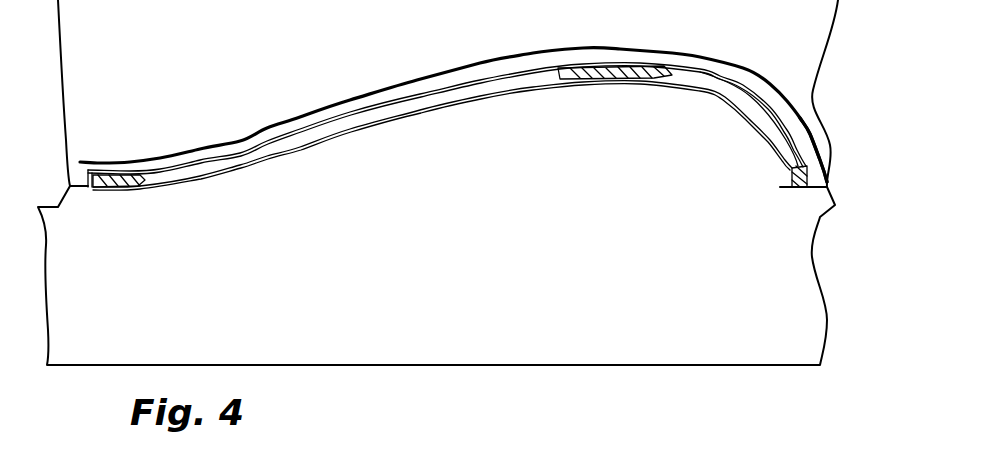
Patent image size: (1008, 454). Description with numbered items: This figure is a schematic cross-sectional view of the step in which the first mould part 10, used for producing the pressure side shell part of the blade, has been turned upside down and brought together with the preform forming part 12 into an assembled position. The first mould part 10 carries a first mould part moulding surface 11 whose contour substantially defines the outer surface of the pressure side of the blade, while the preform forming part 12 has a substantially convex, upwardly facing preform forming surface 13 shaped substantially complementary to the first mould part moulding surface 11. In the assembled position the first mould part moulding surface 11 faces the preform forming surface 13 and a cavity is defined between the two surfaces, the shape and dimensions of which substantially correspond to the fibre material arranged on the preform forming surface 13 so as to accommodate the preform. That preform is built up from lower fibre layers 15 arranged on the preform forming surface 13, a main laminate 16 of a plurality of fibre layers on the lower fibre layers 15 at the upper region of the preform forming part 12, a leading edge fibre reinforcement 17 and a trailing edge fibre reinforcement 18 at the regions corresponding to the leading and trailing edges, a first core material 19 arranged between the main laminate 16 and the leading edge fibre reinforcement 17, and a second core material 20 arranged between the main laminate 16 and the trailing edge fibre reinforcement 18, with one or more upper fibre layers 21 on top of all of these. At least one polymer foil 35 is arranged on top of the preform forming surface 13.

The first mould part 10 is at (656, 18).
The first mould part moulding surface 11 is at (460, 85).
The preform forming part 12 is at (596, 298).
The preform forming surface 13 is at (331, 134).
The lower fibre layer 15 is at (287, 153).
The main laminate 16 is at (591, 76).
The leading edge fibre reinforcement 17 is at (793, 167).
The trailing edge fibre reinforcement 18 is at (118, 187).
The first core material 19 is at (747, 113).
The second core material 20 is at (410, 107).
The upper fibre layer 21 is at (197, 157).
The polymer foil 35 is at (785, 111).